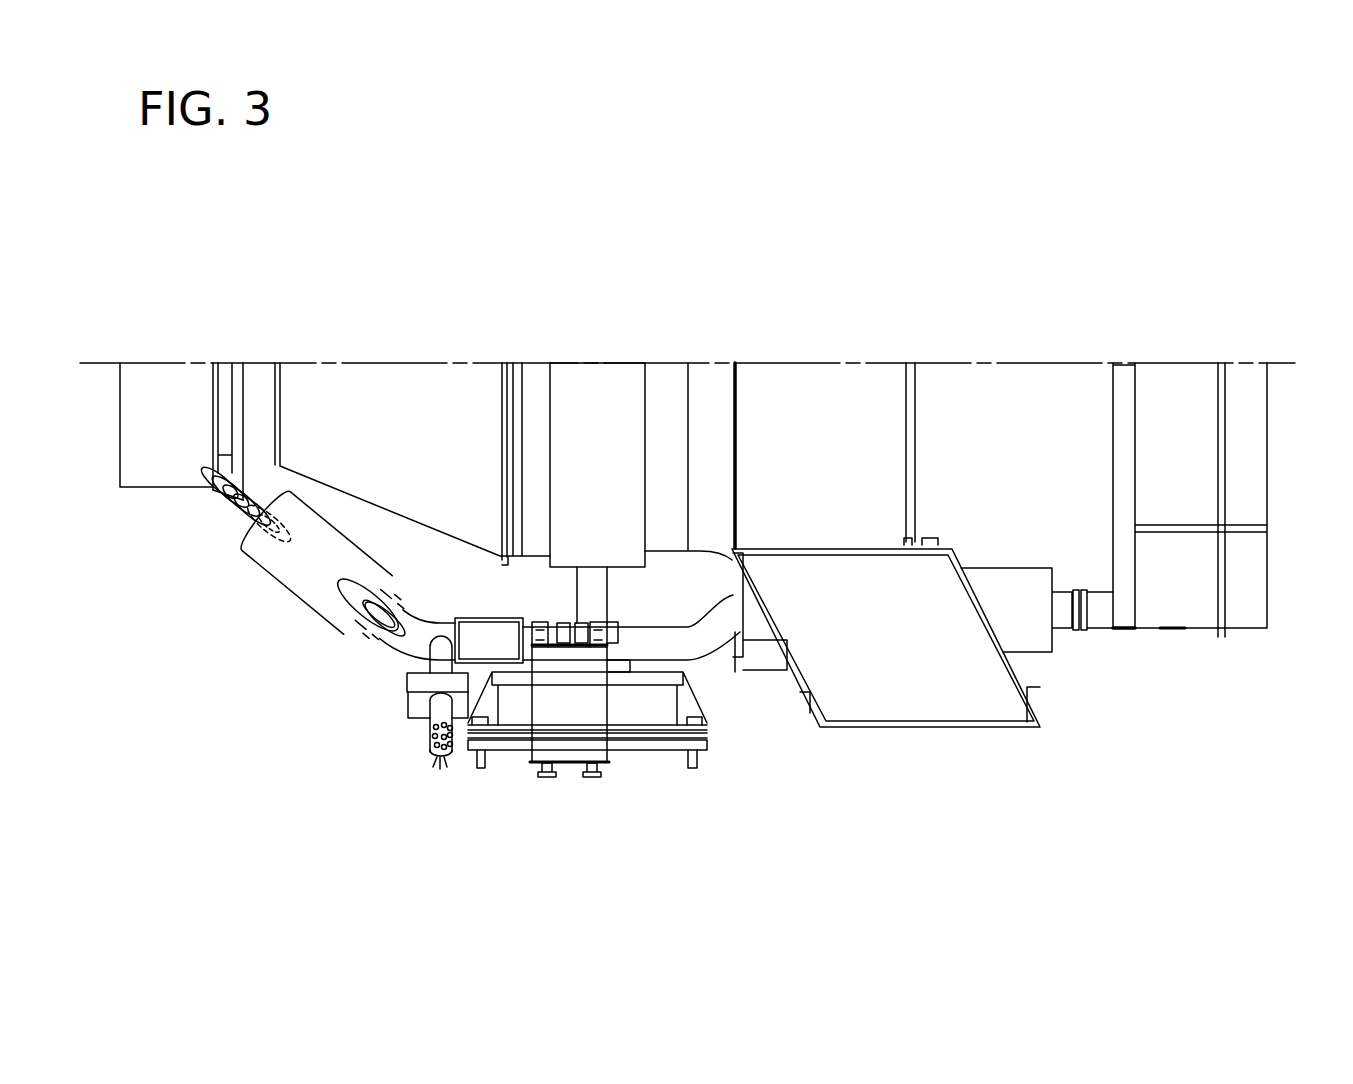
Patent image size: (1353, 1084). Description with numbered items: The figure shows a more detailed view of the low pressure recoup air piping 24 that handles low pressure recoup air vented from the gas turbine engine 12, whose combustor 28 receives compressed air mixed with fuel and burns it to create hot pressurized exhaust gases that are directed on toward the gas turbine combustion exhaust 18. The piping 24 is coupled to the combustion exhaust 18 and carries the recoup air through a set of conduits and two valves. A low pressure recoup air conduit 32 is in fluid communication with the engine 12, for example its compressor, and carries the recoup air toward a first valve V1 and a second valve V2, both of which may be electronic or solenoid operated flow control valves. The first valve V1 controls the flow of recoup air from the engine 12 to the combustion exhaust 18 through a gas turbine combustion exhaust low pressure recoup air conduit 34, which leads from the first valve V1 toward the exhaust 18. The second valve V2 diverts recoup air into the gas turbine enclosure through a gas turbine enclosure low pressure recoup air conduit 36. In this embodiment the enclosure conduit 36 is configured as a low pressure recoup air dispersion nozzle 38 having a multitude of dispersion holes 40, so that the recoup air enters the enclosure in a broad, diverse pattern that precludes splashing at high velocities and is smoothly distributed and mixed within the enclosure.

The gas turbine engine 12 is at (458, 324).
The combustor 28 is at (183, 363).
The gas turbine combustion exhaust 18 is at (1267, 612).
The low pressure recoup air piping 24 is at (452, 822).
The low pressure recoup air conduit 32 is at (427, 623).
The gas turbine combustion exhaust low pressure recoup air conduit 34 is at (707, 650).
The gas turbine enclosure low pressure recoup air conduit 36 is at (432, 703).
The low pressure recoup air dispersion nozzle 38 is at (432, 730).
The dispersion holes 40 is at (440, 757).
The first valve V1 is at (489, 626).
The second valve V2 is at (415, 677).